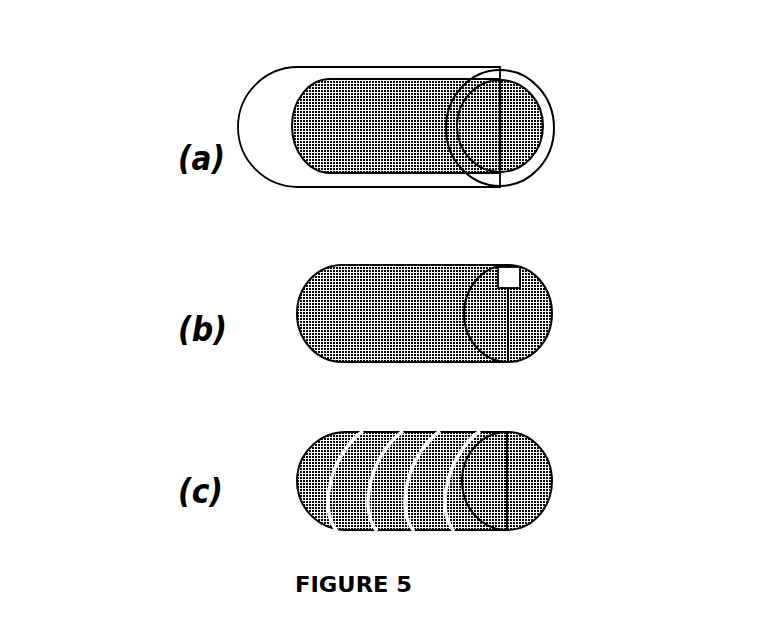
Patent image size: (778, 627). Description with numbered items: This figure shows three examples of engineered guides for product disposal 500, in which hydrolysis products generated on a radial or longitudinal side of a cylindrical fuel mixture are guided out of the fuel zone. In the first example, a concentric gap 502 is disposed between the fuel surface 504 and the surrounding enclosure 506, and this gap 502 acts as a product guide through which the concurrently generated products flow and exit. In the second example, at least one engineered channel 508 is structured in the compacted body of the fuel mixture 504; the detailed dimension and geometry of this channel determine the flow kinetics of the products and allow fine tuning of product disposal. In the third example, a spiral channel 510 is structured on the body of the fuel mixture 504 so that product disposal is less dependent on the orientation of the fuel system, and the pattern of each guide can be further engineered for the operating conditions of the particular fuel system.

The engineered guides for product disposal 500 is at (100, 74).
The gap 502 is at (502, 72).
The fuel surface 504 is at (541, 97).
The enclosure 506 is at (447, 67).
The engineered channel 508 is at (513, 267).
The spiral channel 510 is at (487, 432).